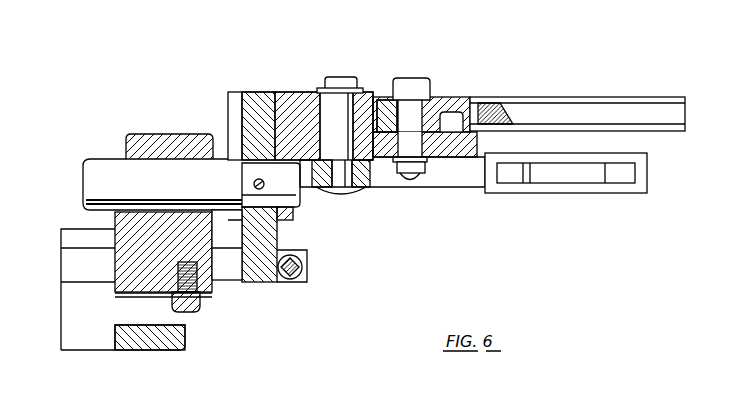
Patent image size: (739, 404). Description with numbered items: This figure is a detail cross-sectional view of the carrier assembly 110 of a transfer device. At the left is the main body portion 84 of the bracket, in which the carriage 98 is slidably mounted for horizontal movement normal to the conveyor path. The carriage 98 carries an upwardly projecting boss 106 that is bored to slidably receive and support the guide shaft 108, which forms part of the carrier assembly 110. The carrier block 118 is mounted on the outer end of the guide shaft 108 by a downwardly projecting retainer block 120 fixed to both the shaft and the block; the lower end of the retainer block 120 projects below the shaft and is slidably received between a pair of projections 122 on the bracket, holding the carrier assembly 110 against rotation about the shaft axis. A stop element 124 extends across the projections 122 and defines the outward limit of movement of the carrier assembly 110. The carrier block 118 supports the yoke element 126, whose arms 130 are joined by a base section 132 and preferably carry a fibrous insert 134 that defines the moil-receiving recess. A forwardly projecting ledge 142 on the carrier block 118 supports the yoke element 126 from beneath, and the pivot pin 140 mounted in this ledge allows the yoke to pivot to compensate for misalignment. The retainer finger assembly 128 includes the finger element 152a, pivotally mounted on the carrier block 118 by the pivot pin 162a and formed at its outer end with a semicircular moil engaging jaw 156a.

The main body portion 84 is at (79, 351).
The carriage 98 is at (70, 237).
The boss 106 is at (172, 143).
The guide shaft 108 is at (90, 178).
The carrier assembly 110 is at (304, 62).
The carrier block 118 is at (293, 94).
The retainer block 120 is at (252, 283).
The projections 122 is at (227, 274).
The stop element 124 is at (297, 280).
The yoke element 126 is at (580, 66).
The retainer finger assembly 128 is at (528, 202).
The arms 130 is at (658, 100).
The base section 132 is at (462, 99).
The insert 134 is at (508, 110).
The pivot pin 140 is at (413, 88).
The ledge 142 is at (465, 142).
The finger element 152a is at (433, 185).
The moil engaging jaw 156a is at (618, 190).
The pivot pin 162a is at (336, 77).